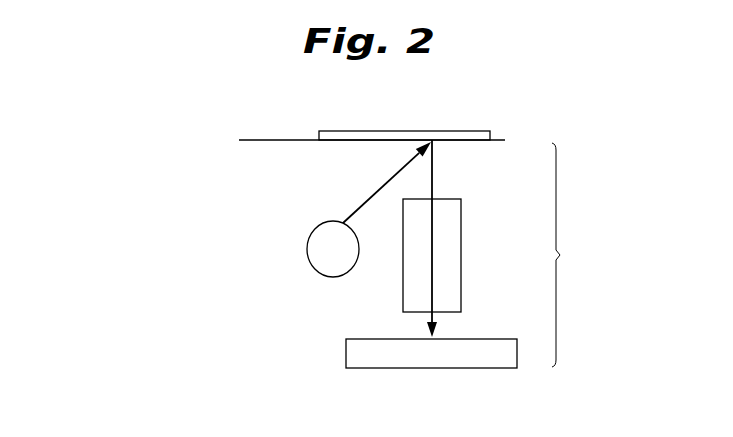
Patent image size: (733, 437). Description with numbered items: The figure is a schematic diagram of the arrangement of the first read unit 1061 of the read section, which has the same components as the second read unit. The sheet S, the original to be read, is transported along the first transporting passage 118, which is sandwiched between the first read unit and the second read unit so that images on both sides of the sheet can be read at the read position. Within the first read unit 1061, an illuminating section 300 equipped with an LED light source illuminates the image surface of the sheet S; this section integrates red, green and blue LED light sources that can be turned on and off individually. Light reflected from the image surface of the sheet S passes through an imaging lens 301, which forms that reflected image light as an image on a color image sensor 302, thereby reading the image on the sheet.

The first transporting passage 118 is at (252, 141).
The sheet S is at (457, 127).
The illuminating section 300 is at (300, 262).
The imaging lens 301 is at (413, 287).
The color image sensor 302 is at (362, 355).
The first read unit 1061 is at (621, 255).